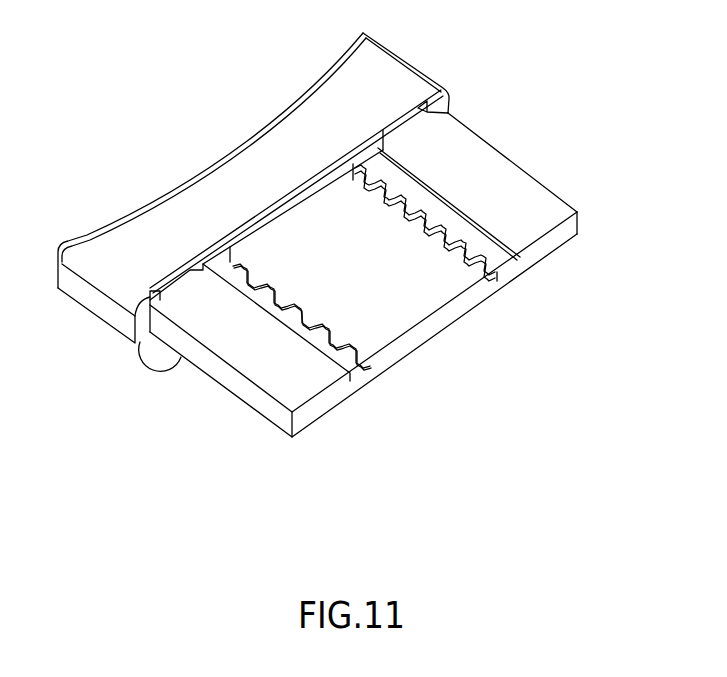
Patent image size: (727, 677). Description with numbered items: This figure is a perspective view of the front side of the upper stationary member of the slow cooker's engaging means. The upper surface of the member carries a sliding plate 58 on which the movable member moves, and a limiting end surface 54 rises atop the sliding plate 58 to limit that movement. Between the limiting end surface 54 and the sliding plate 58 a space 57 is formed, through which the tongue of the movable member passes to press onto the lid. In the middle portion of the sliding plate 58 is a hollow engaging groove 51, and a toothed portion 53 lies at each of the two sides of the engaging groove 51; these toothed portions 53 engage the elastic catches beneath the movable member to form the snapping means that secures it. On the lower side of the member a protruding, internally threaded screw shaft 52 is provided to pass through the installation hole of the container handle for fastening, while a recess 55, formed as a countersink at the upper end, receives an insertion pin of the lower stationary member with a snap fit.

The engaging groove 51 is at (398, 313).
The screw shaft 52 is at (163, 358).
The toothed portion 53 is at (288, 300).
The limiting end surface 54 is at (248, 172).
The recess 55 is at (403, 125).
The space 57 is at (288, 215).
The sliding plate 58 is at (296, 322).